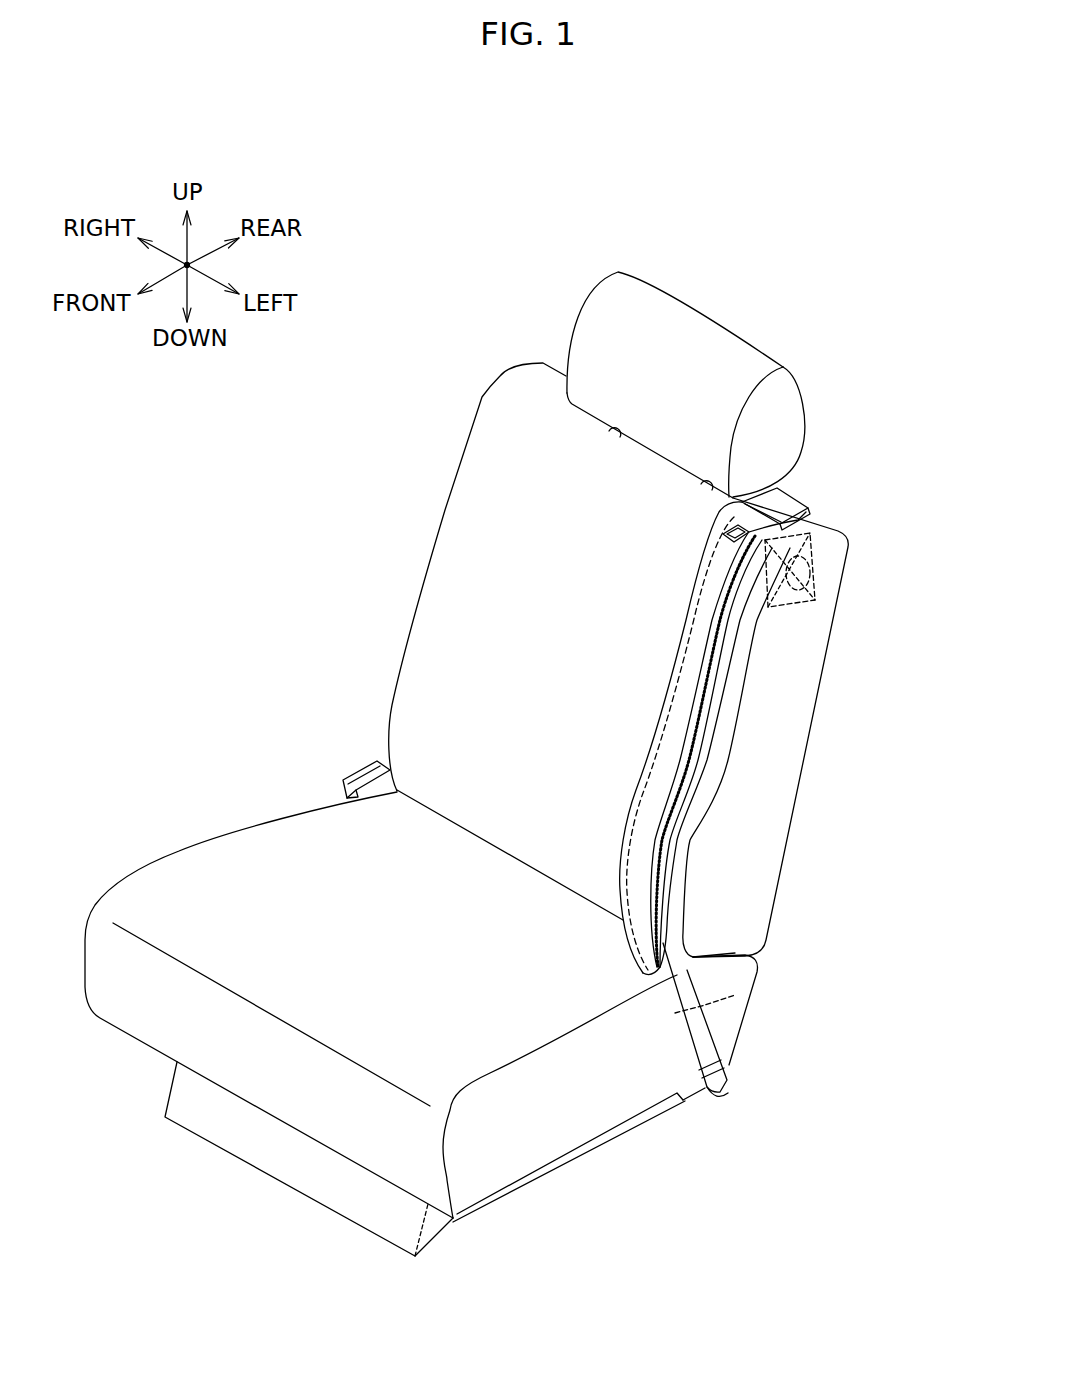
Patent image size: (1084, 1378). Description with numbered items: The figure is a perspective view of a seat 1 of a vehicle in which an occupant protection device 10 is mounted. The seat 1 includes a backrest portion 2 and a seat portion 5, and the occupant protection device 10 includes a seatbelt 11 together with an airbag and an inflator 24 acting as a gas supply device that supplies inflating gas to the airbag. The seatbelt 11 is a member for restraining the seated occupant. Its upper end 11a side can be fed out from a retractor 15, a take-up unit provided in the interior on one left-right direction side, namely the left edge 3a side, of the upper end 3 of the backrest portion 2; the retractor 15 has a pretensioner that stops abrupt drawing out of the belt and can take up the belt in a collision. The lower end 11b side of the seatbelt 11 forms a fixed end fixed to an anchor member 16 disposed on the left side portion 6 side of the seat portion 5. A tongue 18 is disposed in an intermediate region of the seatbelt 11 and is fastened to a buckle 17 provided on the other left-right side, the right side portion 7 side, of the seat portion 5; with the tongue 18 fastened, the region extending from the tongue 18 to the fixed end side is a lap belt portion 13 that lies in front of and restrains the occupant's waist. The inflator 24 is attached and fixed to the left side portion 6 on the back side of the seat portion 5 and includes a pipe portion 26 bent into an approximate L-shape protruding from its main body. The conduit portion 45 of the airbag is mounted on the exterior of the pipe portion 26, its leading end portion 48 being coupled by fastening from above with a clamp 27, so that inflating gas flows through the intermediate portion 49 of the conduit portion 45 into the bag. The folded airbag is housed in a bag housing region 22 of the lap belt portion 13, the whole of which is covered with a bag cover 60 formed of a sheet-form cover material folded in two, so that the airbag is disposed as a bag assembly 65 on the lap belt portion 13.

The seat 1 is at (705, 288).
The backrest portion 2 is at (660, 625).
The upper end 3 is at (523, 346).
The left edge 3a is at (846, 501).
The seat portion 5 is at (381, 912).
The left side portion 6 is at (329, 1003).
The right side portion 7 is at (190, 836).
The occupant protection device 10 is at (768, 1155).
The seatbelt 11 is at (690, 649).
The upper end 11a is at (690, 738).
The lower end 11b is at (811, 1009).
The lap belt portion 13 is at (690, 738).
The retractor 15 is at (823, 574).
The anchor member 16 is at (693, 1000).
The buckle 17 is at (360, 764).
The tongue 18 is at (733, 505).
The bag housing region 22 is at (679, 719).
The inflator 24 is at (804, 1030).
The pipe portion 26 is at (731, 1079).
The clamp 27 is at (723, 1060).
The conduit portion 45 is at (582, 1134).
The leading end portion 48 is at (727, 1094).
The intermediate portion 49 is at (569, 1157).
The bag cover 60 is at (690, 782).
The bag assembly 65 is at (650, 683).